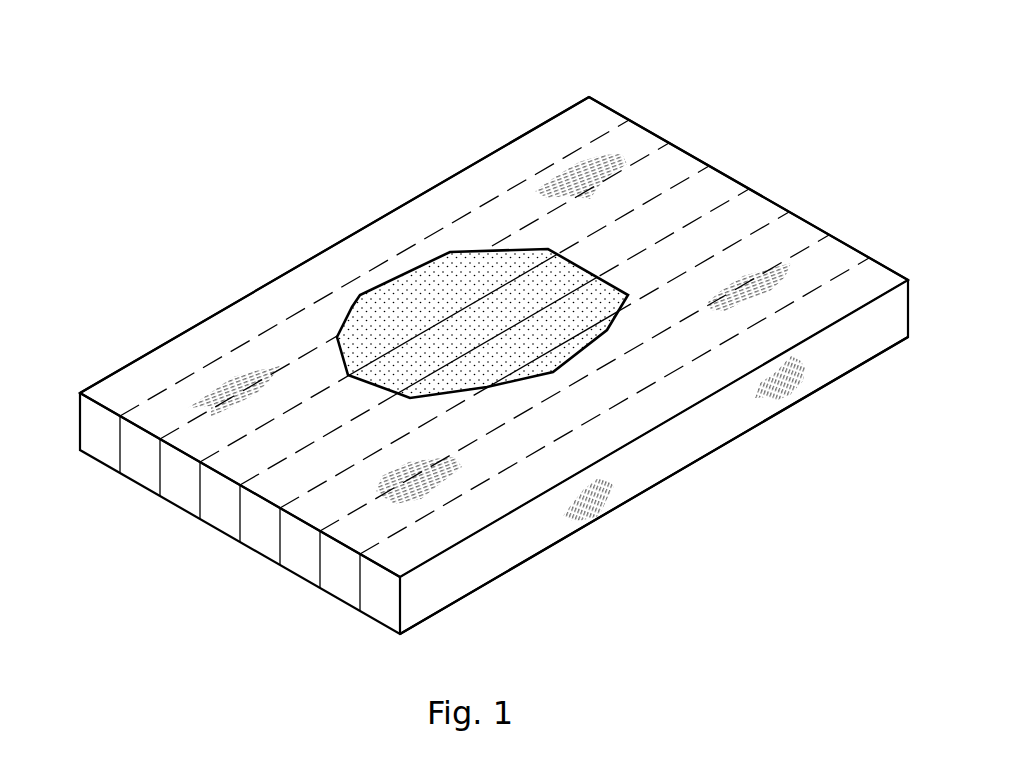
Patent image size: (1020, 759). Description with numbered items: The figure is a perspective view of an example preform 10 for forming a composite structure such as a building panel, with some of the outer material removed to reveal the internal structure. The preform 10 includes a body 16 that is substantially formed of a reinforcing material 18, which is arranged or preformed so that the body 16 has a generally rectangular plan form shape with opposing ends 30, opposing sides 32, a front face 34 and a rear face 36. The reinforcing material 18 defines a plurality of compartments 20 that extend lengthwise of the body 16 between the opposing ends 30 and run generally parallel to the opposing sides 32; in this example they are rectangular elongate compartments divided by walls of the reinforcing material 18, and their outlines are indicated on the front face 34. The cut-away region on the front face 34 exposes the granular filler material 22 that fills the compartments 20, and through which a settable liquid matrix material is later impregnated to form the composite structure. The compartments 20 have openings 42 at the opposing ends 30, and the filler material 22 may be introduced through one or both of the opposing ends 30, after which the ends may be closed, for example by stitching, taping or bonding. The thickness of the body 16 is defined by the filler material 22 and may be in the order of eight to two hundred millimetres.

The preform 10 is at (736, 86).
The body 16 is at (472, 495).
The reinforcing material 18 is at (223, 385).
The compartments 20 is at (227, 510).
The granular filler material 22 is at (530, 330).
The opposing ends 30 is at (737, 178).
The opposing sides 32 is at (263, 287).
The front face 34 is at (515, 210).
The rear face 36 is at (705, 455).
The openings 42 is at (382, 603).